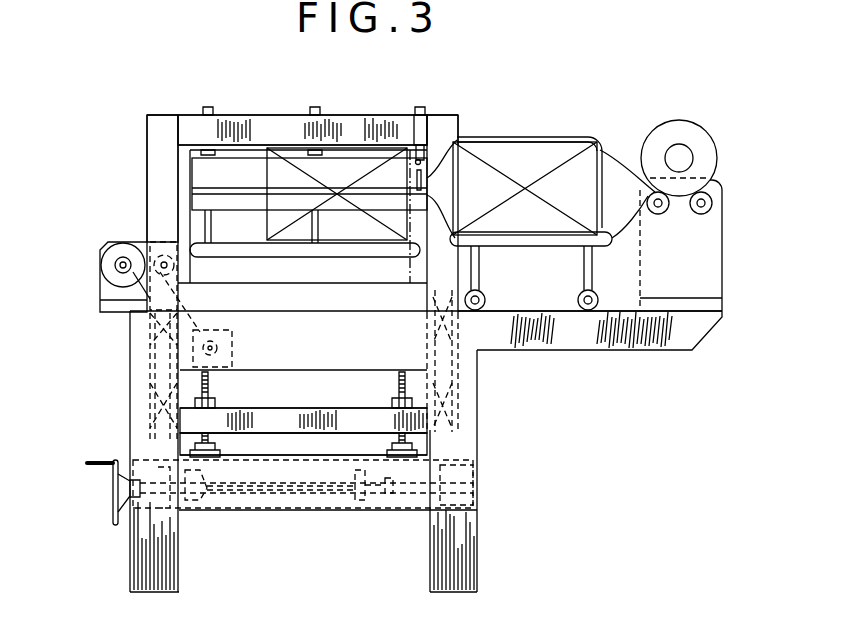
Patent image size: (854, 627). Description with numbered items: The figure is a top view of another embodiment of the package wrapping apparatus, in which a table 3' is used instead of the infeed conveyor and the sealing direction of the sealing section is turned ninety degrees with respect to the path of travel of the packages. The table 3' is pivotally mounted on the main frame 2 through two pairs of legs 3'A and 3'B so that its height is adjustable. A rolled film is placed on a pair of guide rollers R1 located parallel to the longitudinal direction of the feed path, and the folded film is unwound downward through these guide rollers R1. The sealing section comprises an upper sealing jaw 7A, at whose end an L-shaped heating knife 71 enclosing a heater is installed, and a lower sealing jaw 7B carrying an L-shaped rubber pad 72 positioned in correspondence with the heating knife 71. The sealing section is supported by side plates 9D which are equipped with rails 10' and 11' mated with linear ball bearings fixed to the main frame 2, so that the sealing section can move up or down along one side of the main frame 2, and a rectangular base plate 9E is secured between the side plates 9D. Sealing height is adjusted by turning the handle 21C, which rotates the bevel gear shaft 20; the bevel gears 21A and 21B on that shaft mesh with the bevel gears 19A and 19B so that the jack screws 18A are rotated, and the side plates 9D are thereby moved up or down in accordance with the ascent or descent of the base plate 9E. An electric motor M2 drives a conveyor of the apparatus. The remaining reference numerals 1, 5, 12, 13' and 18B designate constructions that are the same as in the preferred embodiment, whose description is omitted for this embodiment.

The winding apparatus 1 is at (252, 80).
The upper sealing jaw 7A is at (352, 114).
The L-shaped heating knife 71 is at (458, 117).
The side plates 9D is at (147, 178).
The take-up roll 5 is at (684, 120).
The guide rollers R1 is at (660, 214).
The table 3' is at (541, 210).
The legs 3'A is at (494, 318).
The legs 3'B is at (577, 316).
The main frame 2 is at (651, 350).
The electric motor M2 is at (232, 350).
The lower sealing jaw 7B is at (333, 270).
The L-shaped rubber pad 72 is at (418, 258).
The rail 10' is at (118, 295).
The left column bracing 12 is at (150, 375).
The jack screws 18A is at (212, 393).
The bevel gear 19A is at (220, 470).
The adjusting bolt 18B is at (393, 393).
The upper bracing 13' is at (477, 355).
The rail 11' is at (477, 411).
The bevel gear 19B is at (474, 485).
The handle 21C is at (112, 500).
The bevel gear 21A is at (190, 500).
The bevel gear shaft 20 is at (287, 495).
The rectangular base plate 9E is at (325, 432).
The bevel gear 21B is at (382, 503).